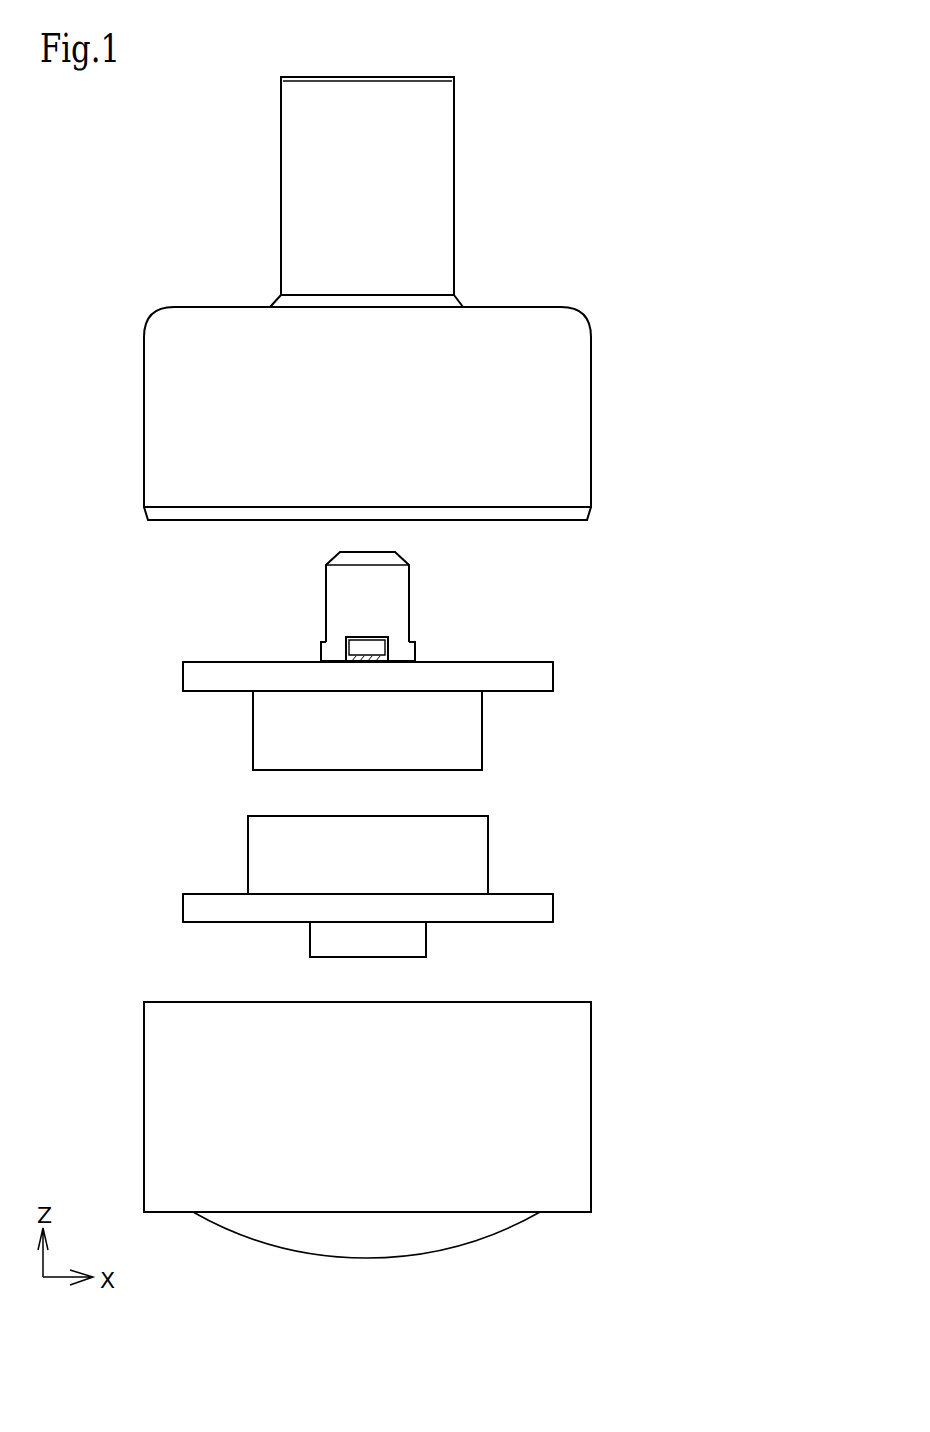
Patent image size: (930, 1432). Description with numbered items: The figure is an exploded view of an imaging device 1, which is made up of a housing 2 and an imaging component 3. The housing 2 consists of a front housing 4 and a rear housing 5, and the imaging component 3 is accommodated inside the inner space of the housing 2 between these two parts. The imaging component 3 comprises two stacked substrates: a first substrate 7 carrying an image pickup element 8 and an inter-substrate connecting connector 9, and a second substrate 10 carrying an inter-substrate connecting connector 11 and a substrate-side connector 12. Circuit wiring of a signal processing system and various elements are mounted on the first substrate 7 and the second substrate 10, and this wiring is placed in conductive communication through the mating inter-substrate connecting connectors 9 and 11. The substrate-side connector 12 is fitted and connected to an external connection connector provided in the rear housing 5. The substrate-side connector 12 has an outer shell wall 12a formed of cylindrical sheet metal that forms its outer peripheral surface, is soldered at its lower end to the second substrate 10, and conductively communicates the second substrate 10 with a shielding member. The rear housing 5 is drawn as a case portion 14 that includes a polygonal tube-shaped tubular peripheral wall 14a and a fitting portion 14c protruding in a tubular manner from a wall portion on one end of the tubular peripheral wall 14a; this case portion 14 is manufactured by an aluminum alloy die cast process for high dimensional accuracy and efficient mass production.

The imaging device 1 is at (647, 150).
The housing 2 is at (379, 667).
The imaging component 3 is at (312, 768).
The front housing 4 is at (144, 1104).
The rear housing 5 is at (281, 213).
The first substrate 7 is at (183, 910).
The image pickup element 8 is at (310, 955).
The inter-substrate connecting connector 9 is at (248, 847).
The second substrate 10 is at (183, 677).
The inter-substrate connecting connector 11 is at (253, 729).
The substrate-side connector 12 is at (326, 608).
The outer shell wall 12a is at (409, 598).
The case portion 14 is at (438, 298).
The tubular peripheral wall 14a is at (591, 465).
The fitting portion 14c is at (454, 213).